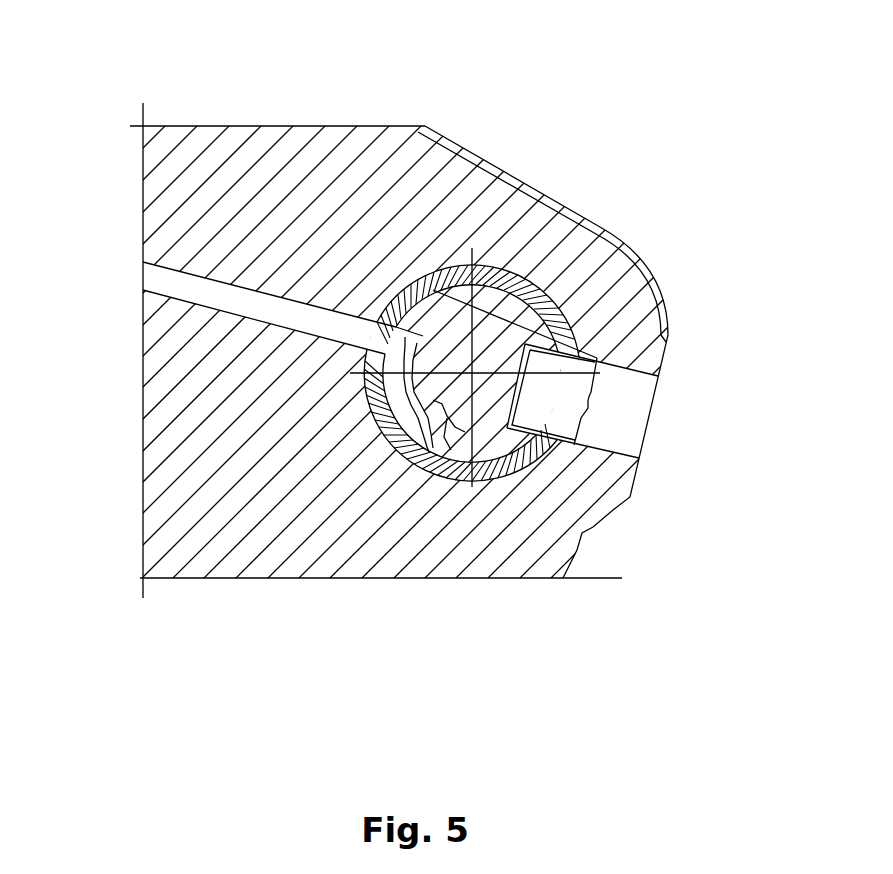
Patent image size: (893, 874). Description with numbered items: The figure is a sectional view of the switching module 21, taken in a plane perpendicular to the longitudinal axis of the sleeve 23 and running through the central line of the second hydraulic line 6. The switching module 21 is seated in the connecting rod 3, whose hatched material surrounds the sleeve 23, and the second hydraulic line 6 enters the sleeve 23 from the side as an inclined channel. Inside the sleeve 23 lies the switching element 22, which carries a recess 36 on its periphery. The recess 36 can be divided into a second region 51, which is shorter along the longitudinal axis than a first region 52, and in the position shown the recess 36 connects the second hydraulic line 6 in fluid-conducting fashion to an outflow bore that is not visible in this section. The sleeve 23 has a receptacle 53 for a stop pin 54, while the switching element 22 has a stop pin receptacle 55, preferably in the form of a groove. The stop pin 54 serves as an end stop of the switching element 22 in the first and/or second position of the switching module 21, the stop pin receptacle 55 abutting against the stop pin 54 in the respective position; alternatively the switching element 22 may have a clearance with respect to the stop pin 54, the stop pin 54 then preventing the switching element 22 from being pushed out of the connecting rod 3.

The connecting rod 3 is at (341, 90).
The second hydraulic line 6 is at (168, 282).
The switching module 21 is at (545, 245).
The switching element 22 is at (450, 317).
The sleeve 23 is at (565, 338).
The recess 36 is at (405, 413).
The second region 51 is at (435, 370).
The first region 52 is at (510, 444).
The receptacle 53 is at (588, 408).
The stop pin 54 is at (626, 437).
The stop pin receptacle 55 is at (513, 397).